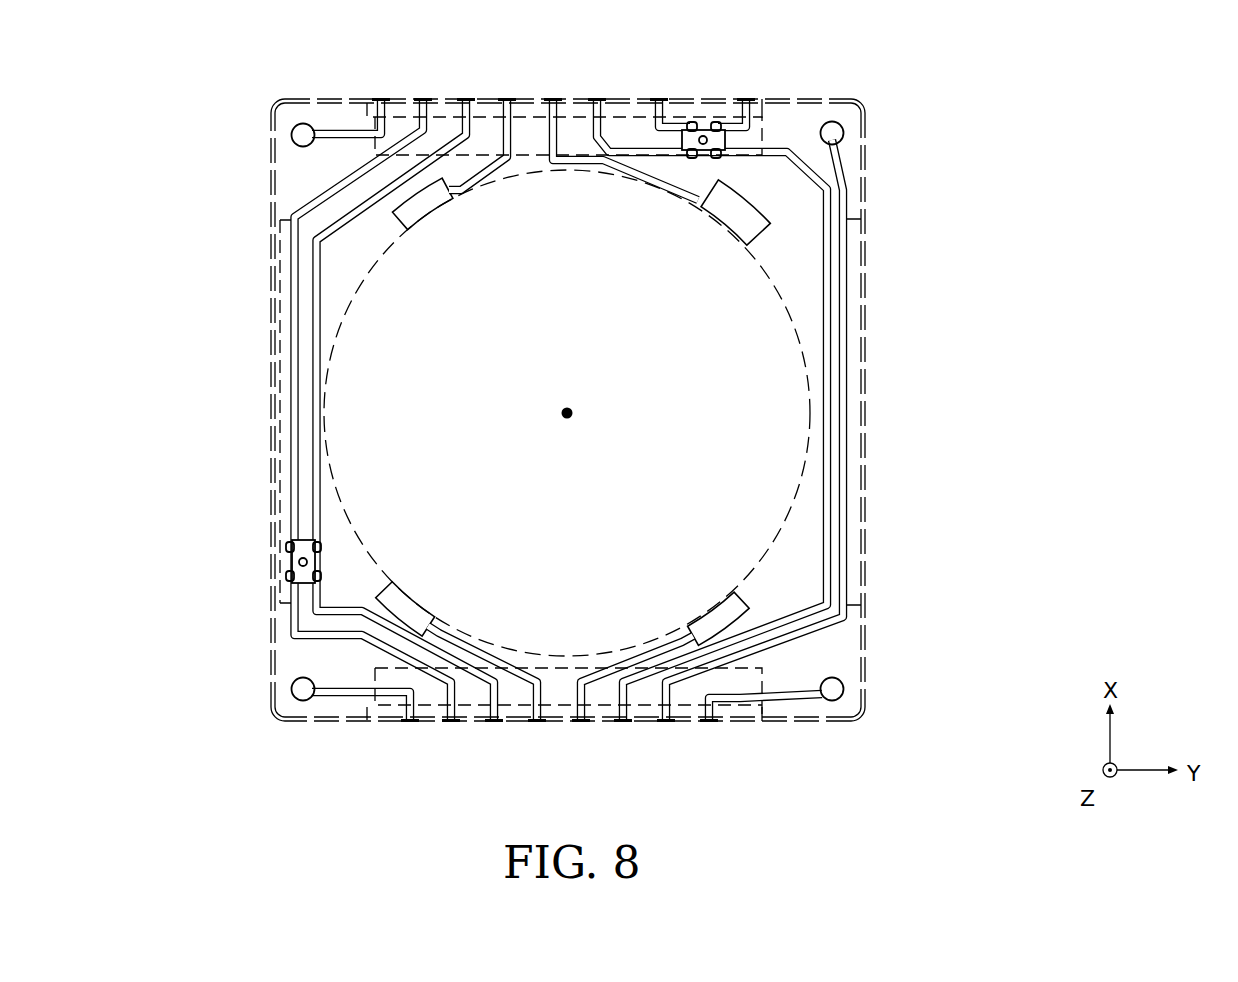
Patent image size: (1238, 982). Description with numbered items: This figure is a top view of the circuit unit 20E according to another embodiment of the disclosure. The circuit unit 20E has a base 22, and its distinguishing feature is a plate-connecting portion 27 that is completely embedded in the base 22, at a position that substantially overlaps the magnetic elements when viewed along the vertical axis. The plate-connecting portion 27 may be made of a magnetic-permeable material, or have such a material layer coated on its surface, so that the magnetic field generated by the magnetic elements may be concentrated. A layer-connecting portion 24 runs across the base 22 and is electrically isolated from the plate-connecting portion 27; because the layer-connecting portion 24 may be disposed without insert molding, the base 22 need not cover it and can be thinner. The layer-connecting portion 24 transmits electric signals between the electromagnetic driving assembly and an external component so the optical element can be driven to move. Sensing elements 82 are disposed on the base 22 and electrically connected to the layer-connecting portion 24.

The circuit unit 20E is at (79, 72).
The base 22 is at (269, 170).
The layer-connecting portion 24 is at (292, 307).
The plate-connecting portion 27 is at (383, 672).
The sensing element 82 is at (703, 128).